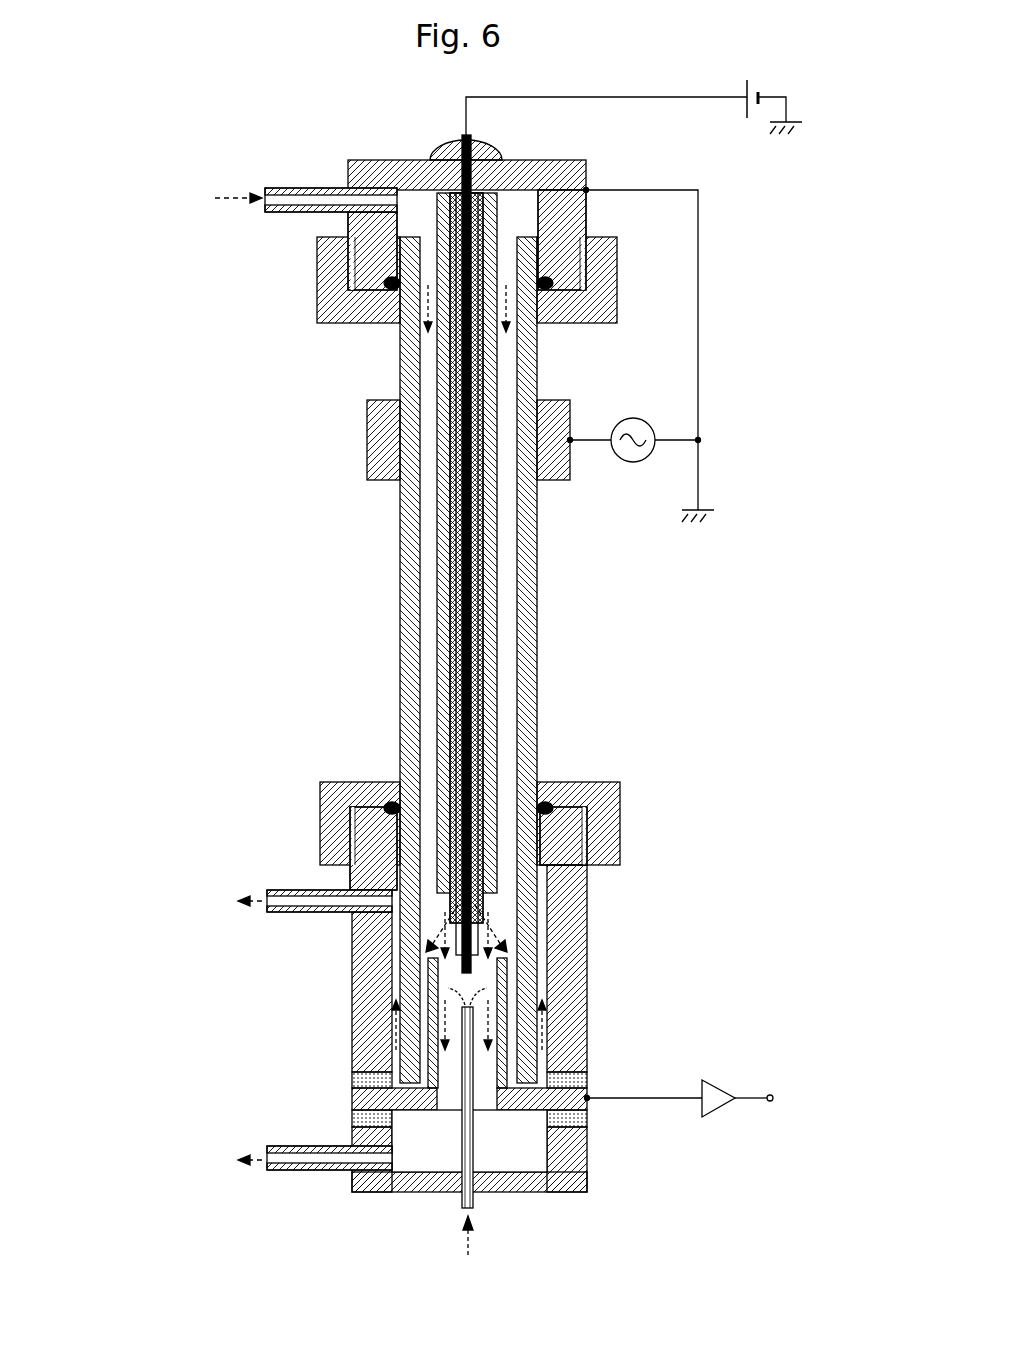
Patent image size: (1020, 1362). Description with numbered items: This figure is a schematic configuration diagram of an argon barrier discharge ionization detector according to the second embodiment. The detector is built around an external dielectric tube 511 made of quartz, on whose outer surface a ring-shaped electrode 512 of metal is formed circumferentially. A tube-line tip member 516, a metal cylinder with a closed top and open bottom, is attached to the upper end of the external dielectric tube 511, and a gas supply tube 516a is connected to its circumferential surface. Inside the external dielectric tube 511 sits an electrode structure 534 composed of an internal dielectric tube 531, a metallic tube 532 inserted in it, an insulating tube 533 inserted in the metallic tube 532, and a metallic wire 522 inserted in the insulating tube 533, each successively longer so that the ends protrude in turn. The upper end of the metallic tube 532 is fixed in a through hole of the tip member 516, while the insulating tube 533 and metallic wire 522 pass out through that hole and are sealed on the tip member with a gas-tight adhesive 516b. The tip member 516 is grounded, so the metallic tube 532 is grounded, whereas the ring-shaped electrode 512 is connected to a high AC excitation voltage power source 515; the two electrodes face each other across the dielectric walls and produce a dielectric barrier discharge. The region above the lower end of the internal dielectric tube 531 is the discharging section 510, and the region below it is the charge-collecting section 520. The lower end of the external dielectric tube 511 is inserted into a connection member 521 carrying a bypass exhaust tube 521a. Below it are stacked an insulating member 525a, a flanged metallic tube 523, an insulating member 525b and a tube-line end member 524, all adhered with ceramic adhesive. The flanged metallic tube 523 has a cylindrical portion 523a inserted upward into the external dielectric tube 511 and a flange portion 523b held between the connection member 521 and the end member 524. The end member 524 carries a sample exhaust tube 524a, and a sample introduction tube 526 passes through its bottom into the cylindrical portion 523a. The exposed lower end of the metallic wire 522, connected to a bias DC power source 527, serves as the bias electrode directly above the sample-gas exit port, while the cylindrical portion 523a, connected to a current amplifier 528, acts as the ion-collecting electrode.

The discharging section 510 is at (118, 80).
The external dielectric tube 511 is at (400, 618).
The ring-shaped electrode 512 is at (367, 440).
The high AC excitation voltage power source 515 is at (646, 417).
The tube-line tip member 516 is at (575, 158).
The gas supply tube 516a is at (300, 186).
The gas-tight adhesive 516b is at (440, 143).
The charge-collecting section 520 is at (118, 905).
The connection member 521 is at (352, 930).
The bypass exhaust tube 521a is at (290, 886).
The metallic wire 522 is at (505, 975).
The flanged metallic tube 523 is at (259, 1038).
The cylindrical portion 523a is at (352, 1050).
The flange portion 523b is at (352, 1100).
The tube-line end member 524 is at (590, 1185).
The sample exhaust tube 524a is at (305, 1172).
The cylindrical insulating member 525a is at (590, 1080).
The cylindrical insulating member 525b is at (590, 1115).
The sample introduction tube 526 is at (460, 1165).
The bias DC power source 527 is at (740, 105).
The current amplifier 528 is at (712, 1117).
The internal dielectric tube 531 is at (497, 878).
The metallic tube 532 is at (485, 912).
The insulating tube 533 is at (477, 945).
The electrode structure 534 is at (684, 870).